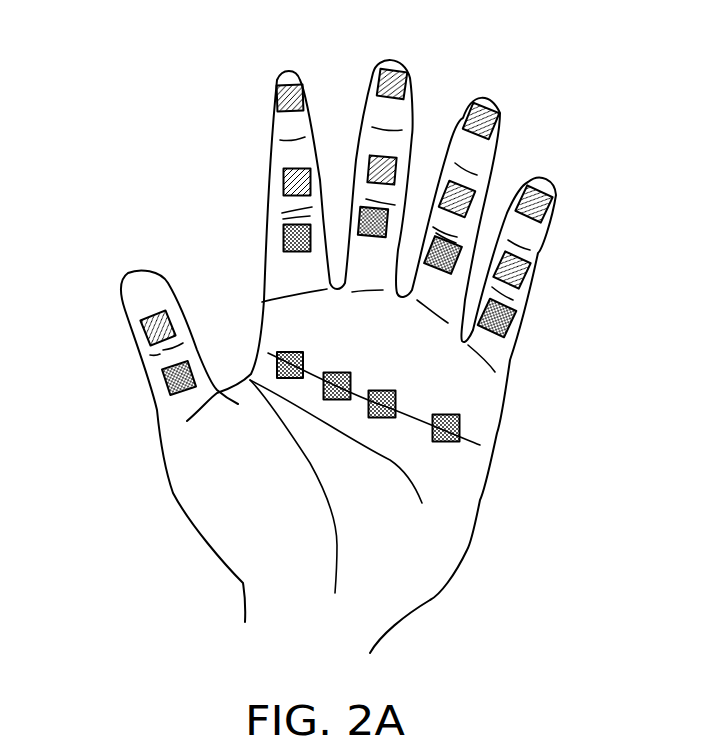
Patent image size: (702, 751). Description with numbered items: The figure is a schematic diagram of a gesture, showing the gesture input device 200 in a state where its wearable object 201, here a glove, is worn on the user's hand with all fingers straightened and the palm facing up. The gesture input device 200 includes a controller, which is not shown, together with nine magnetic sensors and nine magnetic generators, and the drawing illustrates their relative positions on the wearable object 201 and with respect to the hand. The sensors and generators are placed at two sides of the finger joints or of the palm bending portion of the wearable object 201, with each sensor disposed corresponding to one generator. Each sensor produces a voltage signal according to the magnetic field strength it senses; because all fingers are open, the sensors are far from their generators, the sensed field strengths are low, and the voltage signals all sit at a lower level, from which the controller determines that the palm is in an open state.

The gesture input device 200 is at (673, 672).
The wearable object 201 is at (465, 553).